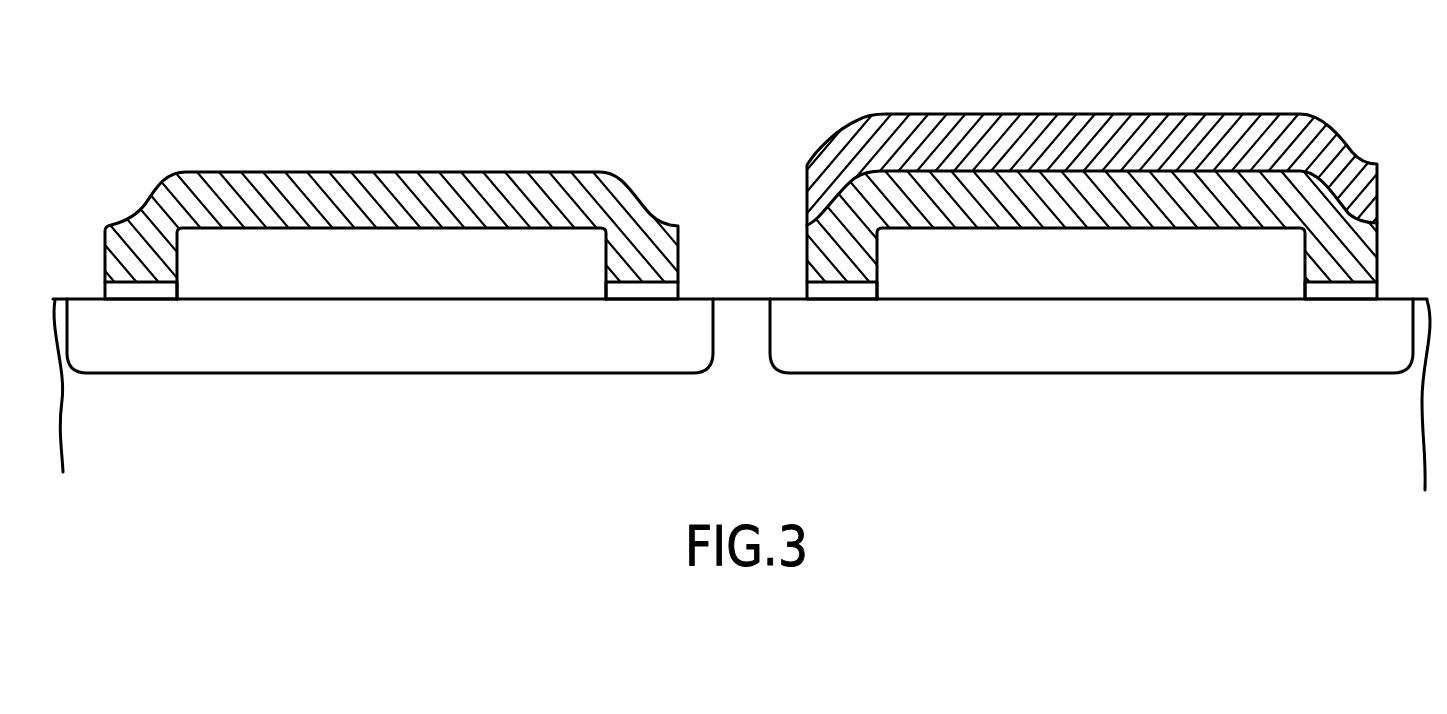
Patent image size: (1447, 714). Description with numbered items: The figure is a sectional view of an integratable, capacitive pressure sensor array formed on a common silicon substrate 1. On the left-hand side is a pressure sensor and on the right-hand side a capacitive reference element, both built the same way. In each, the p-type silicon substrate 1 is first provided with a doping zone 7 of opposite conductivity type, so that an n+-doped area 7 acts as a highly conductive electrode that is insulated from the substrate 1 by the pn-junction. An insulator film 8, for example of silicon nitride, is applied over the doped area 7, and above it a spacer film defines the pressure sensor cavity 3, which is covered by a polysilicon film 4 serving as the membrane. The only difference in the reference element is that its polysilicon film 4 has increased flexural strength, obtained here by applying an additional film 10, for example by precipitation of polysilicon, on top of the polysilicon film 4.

The silicon substrate 1 is at (1373, 433).
The pressure sensor cavity 3 is at (371, 264).
The polysilicon film 4 is at (612, 208).
The doping zone 7 is at (95, 323).
The insulator film 8 is at (637, 290).
The additional film 10 is at (1065, 140).